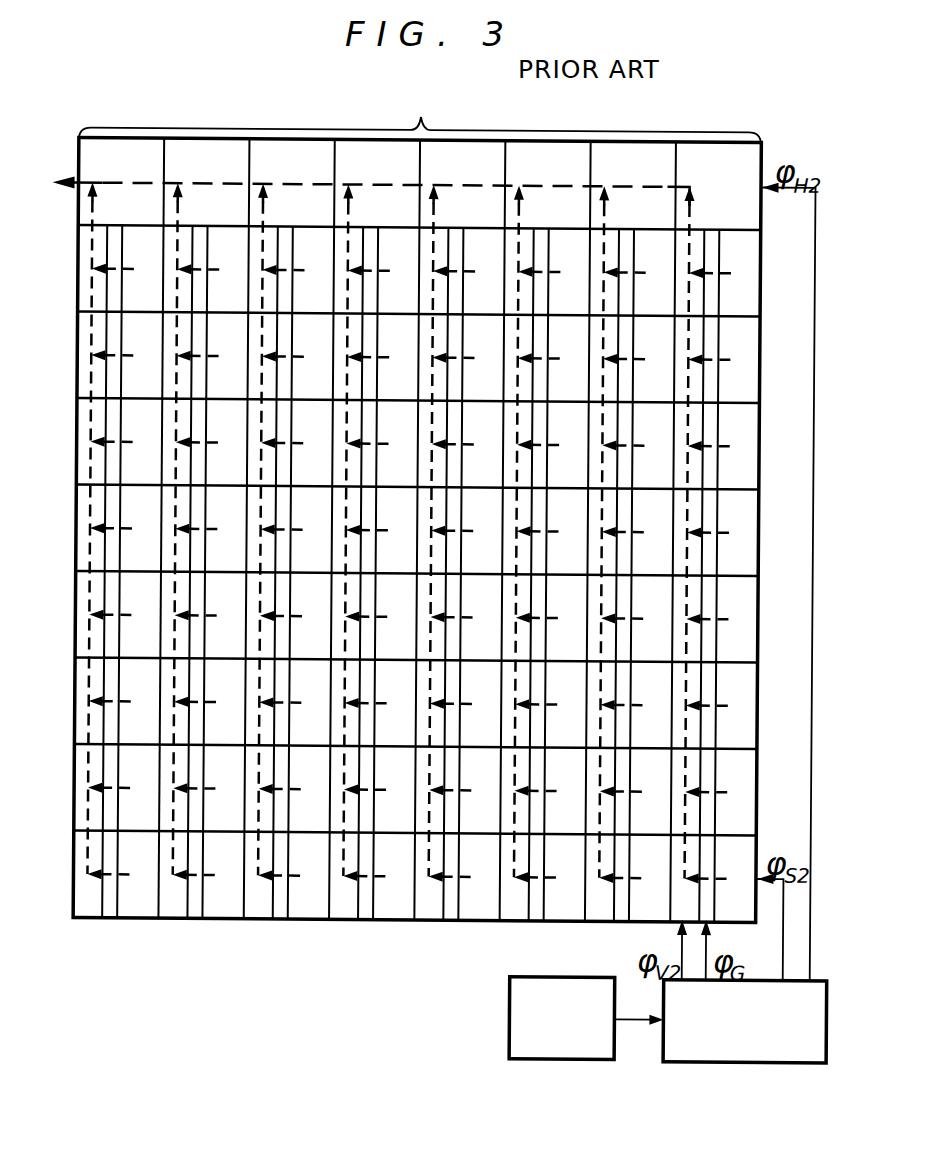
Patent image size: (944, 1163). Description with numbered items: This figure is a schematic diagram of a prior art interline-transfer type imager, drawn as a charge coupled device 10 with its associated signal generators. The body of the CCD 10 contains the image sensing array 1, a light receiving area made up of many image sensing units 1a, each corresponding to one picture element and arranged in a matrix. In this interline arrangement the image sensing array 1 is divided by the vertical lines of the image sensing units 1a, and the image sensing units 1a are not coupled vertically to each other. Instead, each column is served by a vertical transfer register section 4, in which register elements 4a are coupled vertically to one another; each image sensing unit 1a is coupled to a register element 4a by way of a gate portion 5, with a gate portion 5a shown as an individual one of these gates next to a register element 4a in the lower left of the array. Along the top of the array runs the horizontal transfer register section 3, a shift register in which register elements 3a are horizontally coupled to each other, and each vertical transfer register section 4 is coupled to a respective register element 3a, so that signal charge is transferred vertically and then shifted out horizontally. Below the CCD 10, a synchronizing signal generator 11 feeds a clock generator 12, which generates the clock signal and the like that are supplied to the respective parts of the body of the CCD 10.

The image sensing array 1 is at (145, 920).
The image sensing unit 1a is at (140, 850).
The horizontal transfer register section 3 is at (433, 107).
The register element 3a is at (78, 205).
The vertical transfer register section 4 is at (92, 920).
The register element 4a is at (88, 898).
The gate portion 5 is at (113, 920).
The photosensor element 5a is at (110, 845).
The charge coupled device 10 is at (369, 990).
The synchronizing signal generator 11 is at (570, 1058).
The clock signal generator 12 is at (762, 1060).